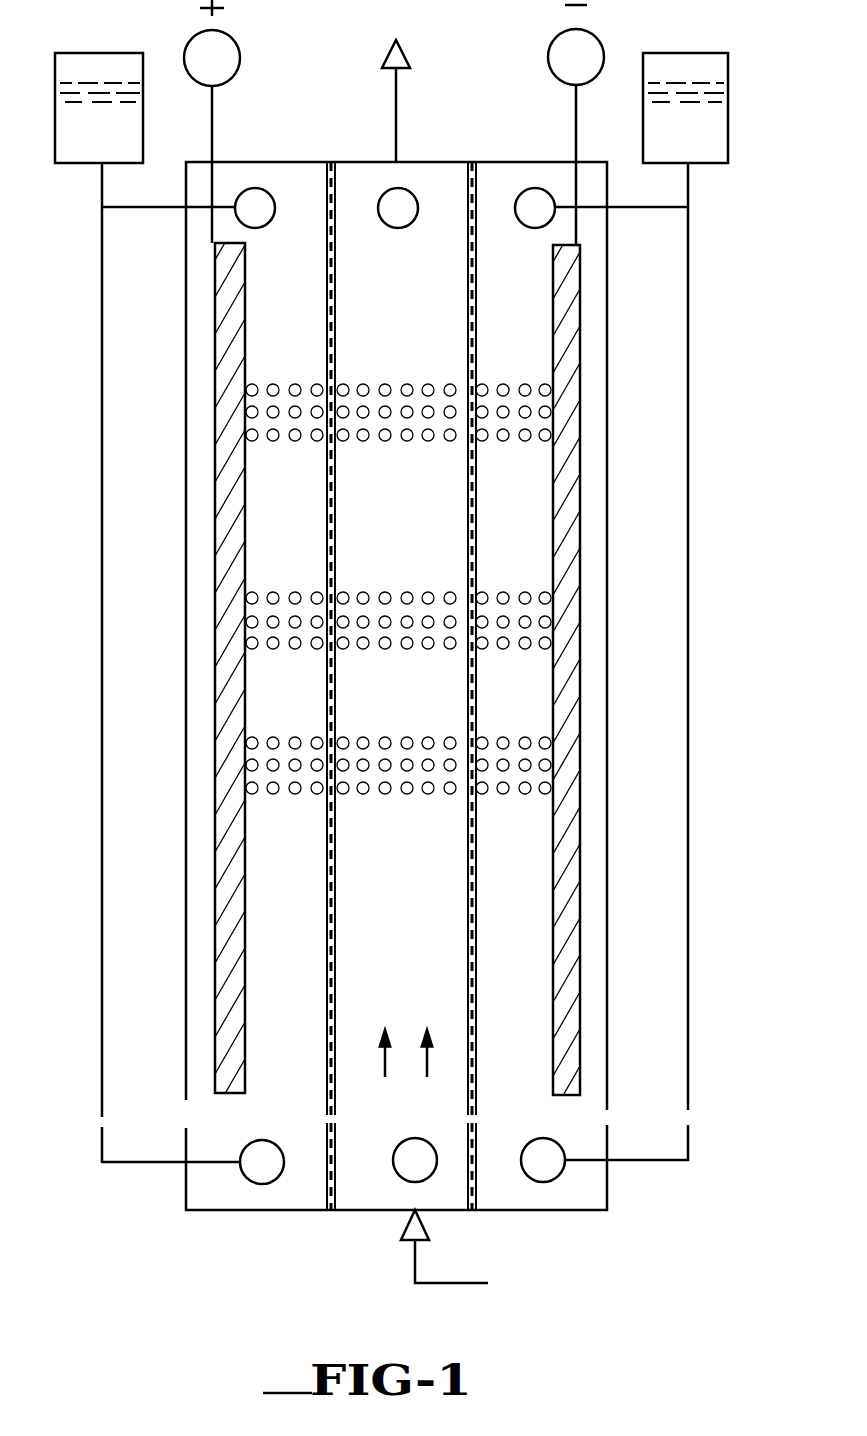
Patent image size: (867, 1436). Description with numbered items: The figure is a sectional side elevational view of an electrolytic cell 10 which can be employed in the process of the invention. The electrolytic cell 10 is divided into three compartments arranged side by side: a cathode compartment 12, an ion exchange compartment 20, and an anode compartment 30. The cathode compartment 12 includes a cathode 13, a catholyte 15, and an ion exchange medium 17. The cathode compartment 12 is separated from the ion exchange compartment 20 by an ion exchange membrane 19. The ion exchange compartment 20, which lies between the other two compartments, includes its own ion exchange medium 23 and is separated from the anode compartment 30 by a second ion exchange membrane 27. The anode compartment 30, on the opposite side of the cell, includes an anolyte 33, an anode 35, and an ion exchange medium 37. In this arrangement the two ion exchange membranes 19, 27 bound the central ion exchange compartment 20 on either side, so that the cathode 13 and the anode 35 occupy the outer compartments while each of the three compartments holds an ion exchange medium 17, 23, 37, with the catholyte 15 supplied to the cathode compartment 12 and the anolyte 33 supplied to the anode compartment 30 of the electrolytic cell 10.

The electrolytic cell 10 is at (211, 1220).
The cathode compartment 12 is at (532, 893).
The cathode 13 is at (570, 668).
The catholyte 15 is at (698, 152).
The ion exchange medium 17 is at (503, 650).
The ion exchange membrane 19 is at (467, 332).
The ion exchange compartment 20 is at (410, 511).
The ion exchange medium 23 is at (387, 590).
The ion exchange membrane 27 is at (332, 312).
The anode compartment 30 is at (306, 886).
The anolyte 33 is at (111, 152).
The anode 35 is at (220, 570).
The ion exchange medium 37 is at (278, 442).